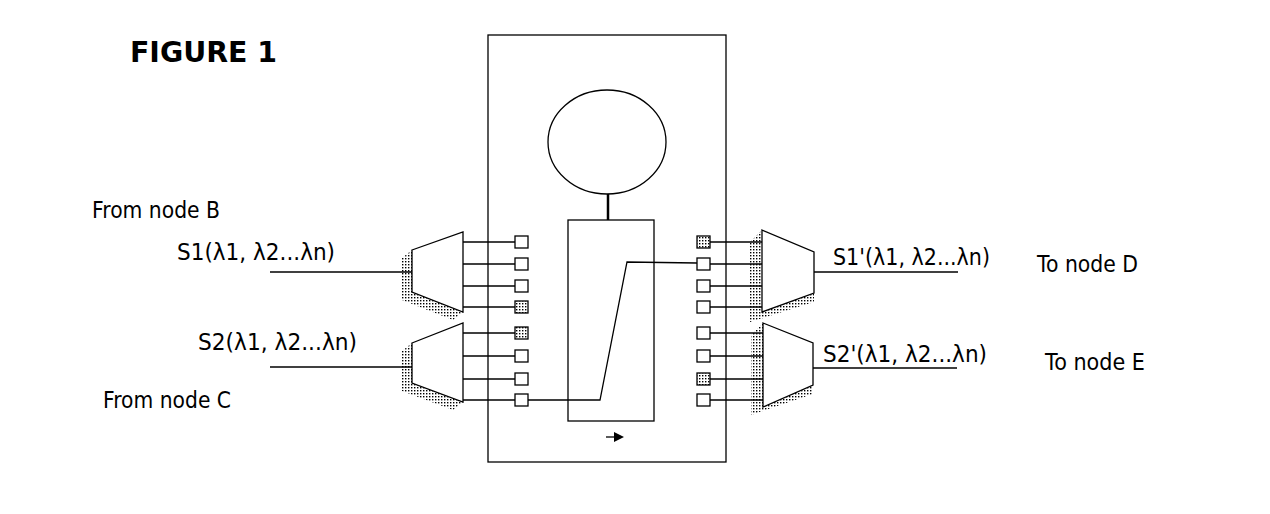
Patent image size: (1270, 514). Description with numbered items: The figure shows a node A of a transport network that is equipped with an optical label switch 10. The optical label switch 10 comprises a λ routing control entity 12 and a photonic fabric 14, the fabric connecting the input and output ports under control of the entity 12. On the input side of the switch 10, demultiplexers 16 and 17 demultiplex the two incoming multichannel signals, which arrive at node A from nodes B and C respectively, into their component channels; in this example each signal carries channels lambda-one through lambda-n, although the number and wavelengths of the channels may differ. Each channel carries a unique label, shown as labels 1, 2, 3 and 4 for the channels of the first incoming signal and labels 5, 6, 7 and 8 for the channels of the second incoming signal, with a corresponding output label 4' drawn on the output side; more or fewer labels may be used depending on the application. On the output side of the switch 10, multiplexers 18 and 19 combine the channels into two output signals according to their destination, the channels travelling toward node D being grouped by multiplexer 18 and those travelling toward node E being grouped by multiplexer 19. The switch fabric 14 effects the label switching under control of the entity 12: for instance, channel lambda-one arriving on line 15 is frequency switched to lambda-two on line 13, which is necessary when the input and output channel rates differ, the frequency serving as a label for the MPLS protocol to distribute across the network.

The channel label 1 is at (515, 240).
The channel label 2 is at (529, 262).
The channel label 3 is at (530, 290).
The channel label 4 is at (538, 299).
The output port 4' is at (723, 200).
The channel label 5 is at (530, 336).
The channel label 6 is at (530, 358).
The channel label 7 is at (530, 381).
The channel label 8 is at (512, 401).
The optical label switch 10 is at (726, 137).
The λ routing control entity 12 is at (548, 133).
The line 13 is at (609, 355).
The photonic fabric 14 is at (573, 423).
The line 15 is at (336, 370).
The demultiplexer 16 is at (420, 240).
The demultiplexer 17 is at (420, 393).
The multiplexer 18 is at (784, 250).
The multiplexer 19 is at (800, 393).
The node A is at (890, 110).